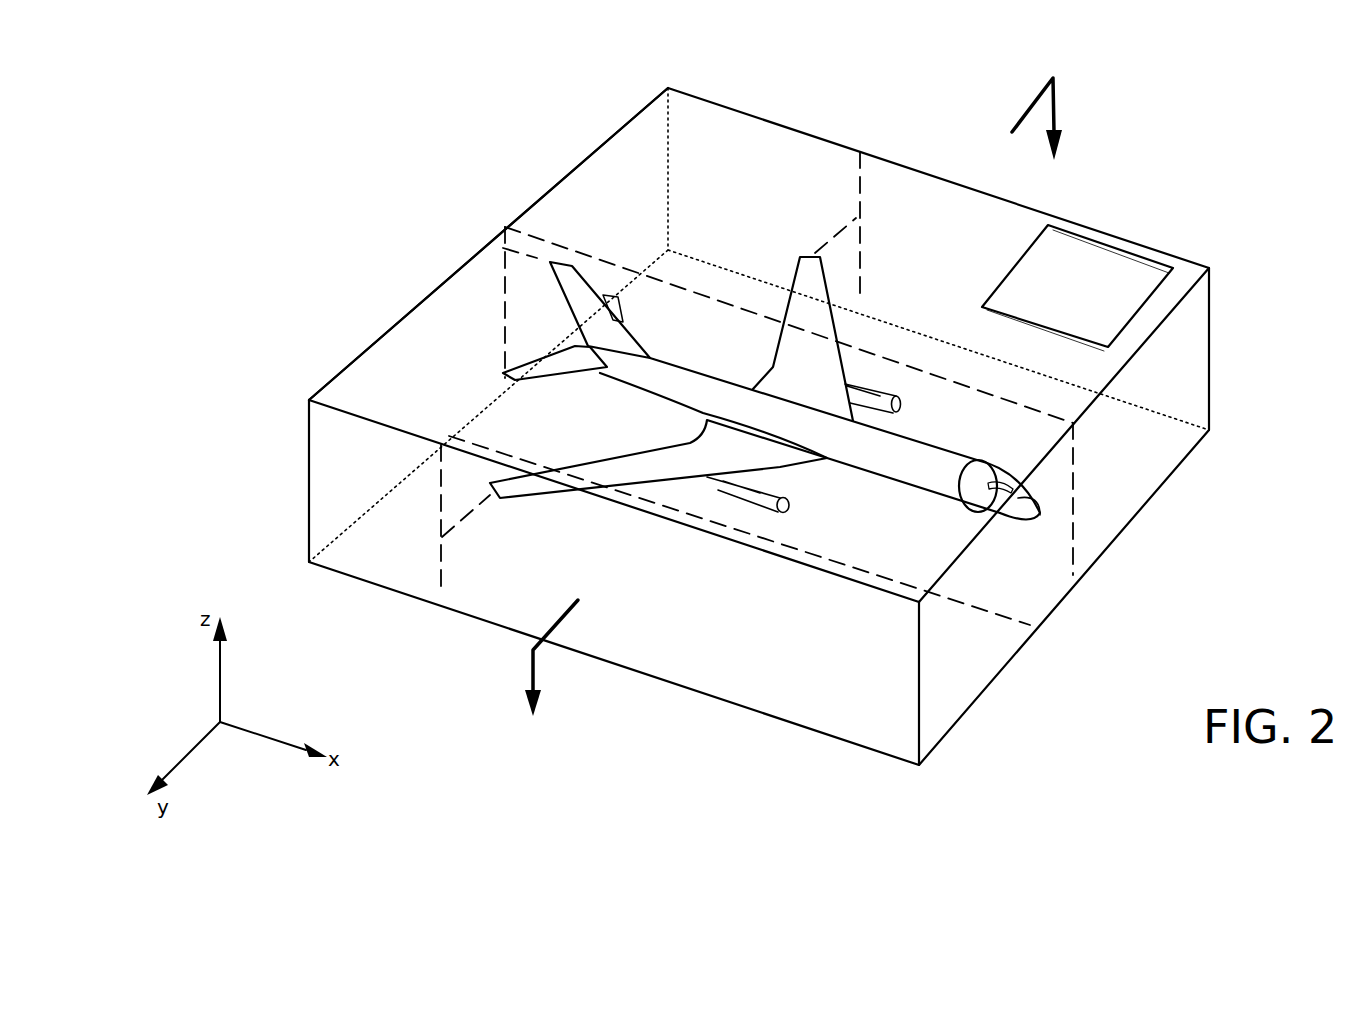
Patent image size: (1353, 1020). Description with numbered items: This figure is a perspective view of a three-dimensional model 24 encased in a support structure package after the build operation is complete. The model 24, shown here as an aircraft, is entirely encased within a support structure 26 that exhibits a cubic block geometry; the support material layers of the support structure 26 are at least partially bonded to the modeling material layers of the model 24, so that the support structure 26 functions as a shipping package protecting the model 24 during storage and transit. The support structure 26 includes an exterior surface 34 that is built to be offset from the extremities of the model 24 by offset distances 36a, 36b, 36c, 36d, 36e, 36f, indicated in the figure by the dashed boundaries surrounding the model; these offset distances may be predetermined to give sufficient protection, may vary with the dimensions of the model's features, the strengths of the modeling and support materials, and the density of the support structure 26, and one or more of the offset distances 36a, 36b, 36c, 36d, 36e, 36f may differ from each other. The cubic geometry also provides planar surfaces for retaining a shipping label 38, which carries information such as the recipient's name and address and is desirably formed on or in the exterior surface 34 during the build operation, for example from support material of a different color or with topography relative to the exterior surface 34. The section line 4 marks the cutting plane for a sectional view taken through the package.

The 3D model 24 is at (738, 388).
The support structure 26 is at (786, 120).
The exterior surface 34 is at (566, 176).
The offset distance 36a is at (557, 244).
The offset distance 36b is at (767, 538).
The offset distance 36c is at (1062, 526).
The offset distance 36d is at (505, 300).
The offset distance 36e is at (462, 520).
The offset distance 36f is at (843, 230).
The shipping label 38 is at (1134, 262).
The section line 4- 4 is at (804, 410).